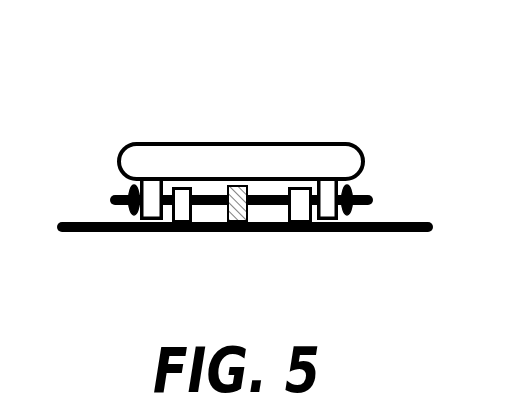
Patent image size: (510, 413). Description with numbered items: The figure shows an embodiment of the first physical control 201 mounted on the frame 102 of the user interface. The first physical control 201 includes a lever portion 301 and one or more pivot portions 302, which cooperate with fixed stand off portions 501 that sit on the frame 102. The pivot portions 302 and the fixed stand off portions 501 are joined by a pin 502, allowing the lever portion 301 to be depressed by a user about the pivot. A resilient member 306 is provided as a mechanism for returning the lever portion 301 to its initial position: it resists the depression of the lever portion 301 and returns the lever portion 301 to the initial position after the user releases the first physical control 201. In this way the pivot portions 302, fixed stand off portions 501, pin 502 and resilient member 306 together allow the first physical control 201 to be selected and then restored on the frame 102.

The first physical control 201 is at (176, 91).
The frame 102 is at (90, 222).
The pin 502 is at (372, 203).
The lever portion 301 is at (318, 142).
The pivot portion 302 is at (328, 233).
The resilient member 306 is at (227, 212).
The fixed stand off portion 501 is at (285, 213).